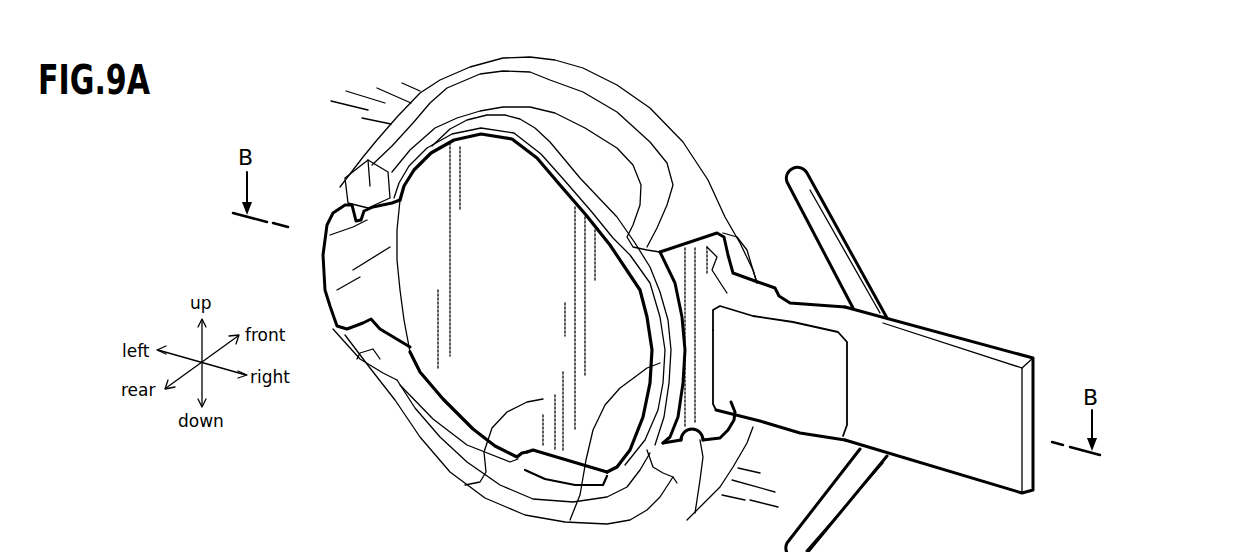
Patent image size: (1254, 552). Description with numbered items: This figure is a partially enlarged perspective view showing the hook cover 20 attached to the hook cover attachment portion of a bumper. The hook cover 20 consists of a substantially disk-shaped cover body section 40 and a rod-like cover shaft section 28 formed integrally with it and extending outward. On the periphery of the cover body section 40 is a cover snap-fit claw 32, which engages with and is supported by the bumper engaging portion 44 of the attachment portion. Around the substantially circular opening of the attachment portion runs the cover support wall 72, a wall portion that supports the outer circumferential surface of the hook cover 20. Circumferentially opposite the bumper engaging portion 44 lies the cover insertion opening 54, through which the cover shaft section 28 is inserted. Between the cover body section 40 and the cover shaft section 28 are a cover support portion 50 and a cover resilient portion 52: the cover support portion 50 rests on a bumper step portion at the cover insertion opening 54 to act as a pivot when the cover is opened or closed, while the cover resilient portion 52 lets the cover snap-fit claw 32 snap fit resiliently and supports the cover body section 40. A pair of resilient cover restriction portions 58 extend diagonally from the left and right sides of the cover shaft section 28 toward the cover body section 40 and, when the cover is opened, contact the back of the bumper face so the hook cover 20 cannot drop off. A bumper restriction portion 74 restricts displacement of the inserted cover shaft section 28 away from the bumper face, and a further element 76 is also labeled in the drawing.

The hook cover 20 is at (939, 394).
The cover shaft section 28 is at (939, 426).
The cover snap-fit claw 32 is at (336, 290).
The cover body section 40 is at (476, 427).
The bumper engaging portion 44 is at (336, 184).
The cover support portion 50 is at (752, 338).
The cover resilient portion 52 is at (780, 396).
The cover insertion opening 54 is at (712, 475).
The cover restriction portions 58 is at (840, 359).
The cover support wall 72 is at (544, 170).
The bumper restriction portion 74 is at (591, 457).
The rib 76 is at (696, 489).